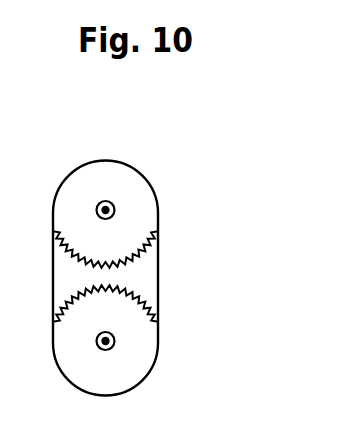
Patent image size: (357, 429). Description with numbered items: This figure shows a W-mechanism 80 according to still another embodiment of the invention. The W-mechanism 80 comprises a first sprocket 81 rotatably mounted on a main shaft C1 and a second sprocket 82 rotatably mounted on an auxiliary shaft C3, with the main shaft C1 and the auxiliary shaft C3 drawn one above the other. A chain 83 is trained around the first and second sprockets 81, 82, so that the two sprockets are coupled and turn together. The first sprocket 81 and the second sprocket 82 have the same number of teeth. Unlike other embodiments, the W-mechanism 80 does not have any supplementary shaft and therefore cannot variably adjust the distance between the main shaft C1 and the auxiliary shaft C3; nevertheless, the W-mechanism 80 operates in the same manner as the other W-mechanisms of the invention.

The W-mechanism 80 is at (203, 188).
The first sprocket 81 is at (137, 330).
The second sprocket 82 is at (127, 185).
The chain 83 is at (158, 272).
The auxiliary shaft C3 is at (114, 209).
The main shaft C1 is at (114, 341).